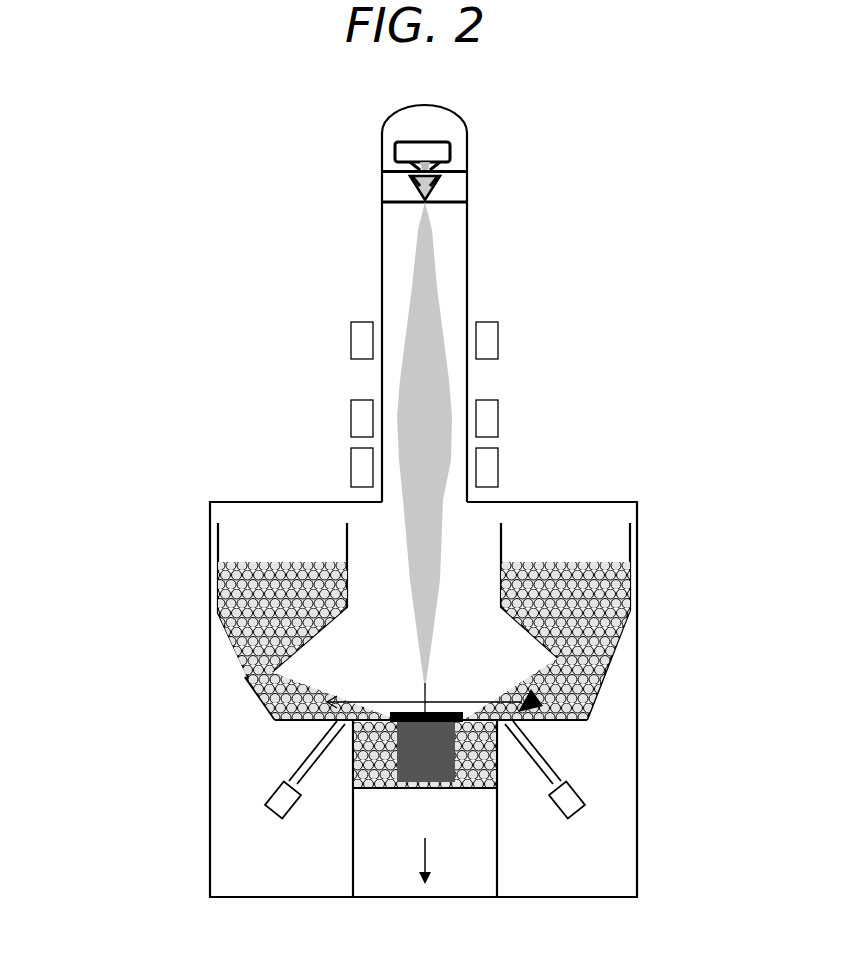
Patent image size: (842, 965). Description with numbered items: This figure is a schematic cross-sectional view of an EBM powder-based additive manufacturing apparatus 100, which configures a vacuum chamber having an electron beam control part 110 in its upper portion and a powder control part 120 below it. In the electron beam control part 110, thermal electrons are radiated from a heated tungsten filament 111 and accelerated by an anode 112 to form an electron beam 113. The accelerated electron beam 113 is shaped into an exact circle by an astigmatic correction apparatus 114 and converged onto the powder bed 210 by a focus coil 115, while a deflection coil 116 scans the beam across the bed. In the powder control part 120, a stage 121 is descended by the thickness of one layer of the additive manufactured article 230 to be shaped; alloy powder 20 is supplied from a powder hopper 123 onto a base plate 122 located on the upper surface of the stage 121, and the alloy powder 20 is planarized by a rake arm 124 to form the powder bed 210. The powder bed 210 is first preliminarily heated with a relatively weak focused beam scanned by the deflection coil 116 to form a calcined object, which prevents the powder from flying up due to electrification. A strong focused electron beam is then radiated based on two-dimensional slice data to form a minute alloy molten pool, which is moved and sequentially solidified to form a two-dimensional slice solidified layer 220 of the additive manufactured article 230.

The EBM powder-based additive manufacturing apparatus 100 is at (108, 337).
The electron beam control part 110 is at (190, 110).
The tungsten filament 111 is at (476, 133).
The anode 112 is at (476, 176).
The electron beam 113 is at (425, 283).
The astigmatic correction apparatus 114 is at (487, 338).
The focus coil 115 is at (487, 415).
The deflection coil 116 is at (487, 463).
The powder control part 120 is at (190, 892).
The stage 121 is at (480, 877).
The base plate 122 is at (377, 790).
The powder hopper 123 is at (590, 533).
The rake arm 124 is at (537, 707).
The alloy powder 20 is at (618, 578).
The powder bed 210 is at (490, 692).
The 2D slice solidified layer 220 is at (443, 712).
The additive manufactured article 230 is at (413, 757).